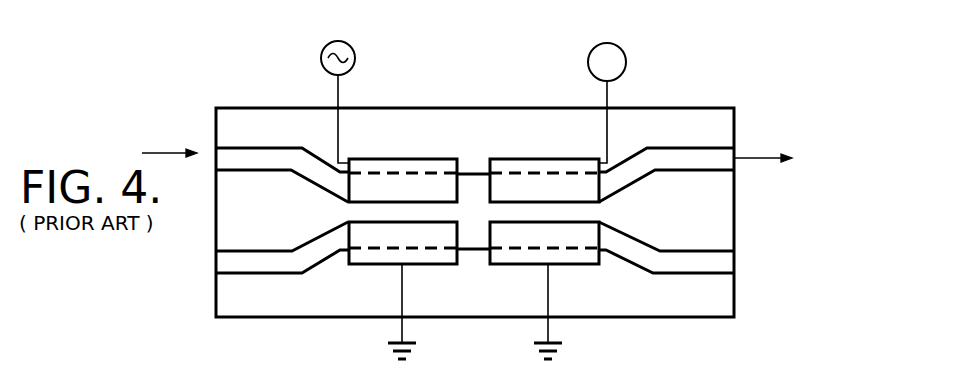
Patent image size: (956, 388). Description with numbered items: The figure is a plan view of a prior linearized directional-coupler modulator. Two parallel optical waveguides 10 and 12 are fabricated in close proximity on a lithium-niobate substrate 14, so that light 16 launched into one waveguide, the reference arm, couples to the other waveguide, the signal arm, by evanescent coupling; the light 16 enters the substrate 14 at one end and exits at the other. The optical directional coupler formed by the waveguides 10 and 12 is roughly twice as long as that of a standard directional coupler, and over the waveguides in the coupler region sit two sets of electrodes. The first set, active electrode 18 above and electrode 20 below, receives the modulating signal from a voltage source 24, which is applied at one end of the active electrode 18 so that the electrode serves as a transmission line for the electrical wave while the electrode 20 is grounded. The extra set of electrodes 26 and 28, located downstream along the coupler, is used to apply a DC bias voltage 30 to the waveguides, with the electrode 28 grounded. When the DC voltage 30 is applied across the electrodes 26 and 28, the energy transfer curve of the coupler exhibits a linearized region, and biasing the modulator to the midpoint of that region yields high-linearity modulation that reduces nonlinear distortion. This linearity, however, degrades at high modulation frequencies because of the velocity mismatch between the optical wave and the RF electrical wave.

The waveguide 10 is at (243, 157).
The waveguide 12 is at (250, 262).
The lithium-niobate substrate 14 is at (718, 222).
The light 16 is at (173, 152).
The active electrode 18 is at (407, 159).
The electrode 20 is at (366, 252).
The voltage source 24 is at (350, 46).
The electrode 26 is at (553, 159).
The electrode 28 is at (565, 265).
The DC bias voltage 30 is at (622, 47).